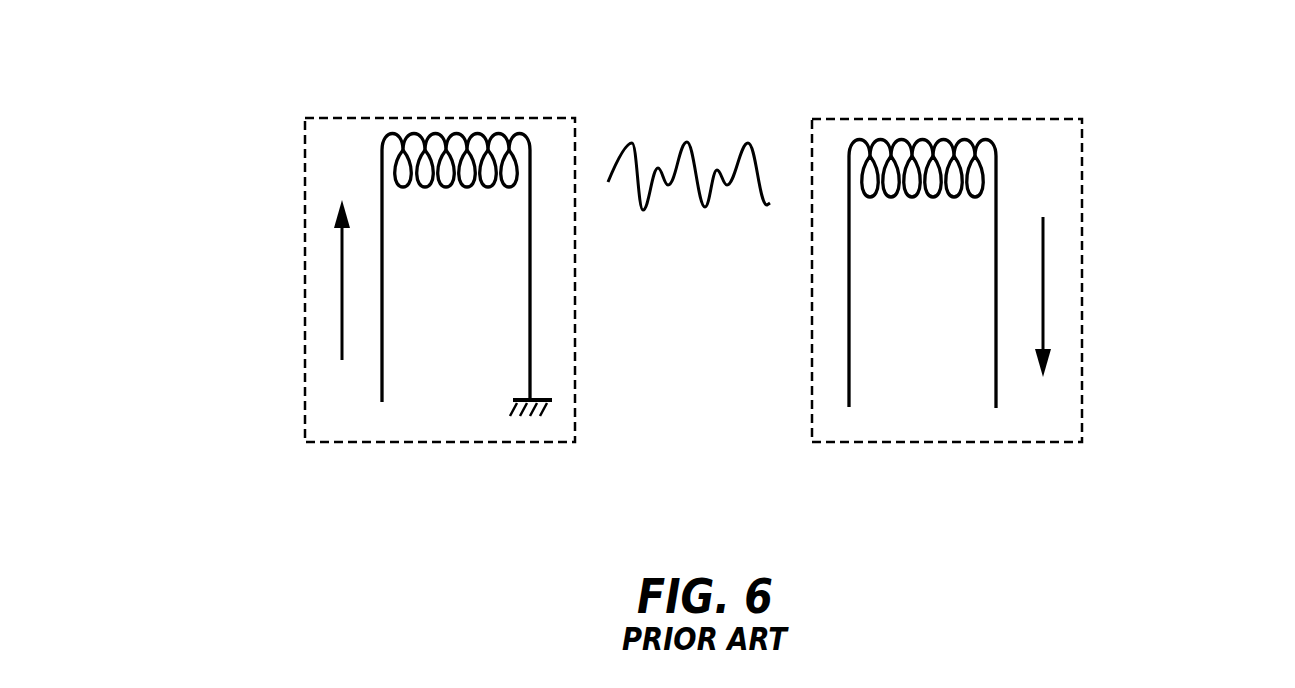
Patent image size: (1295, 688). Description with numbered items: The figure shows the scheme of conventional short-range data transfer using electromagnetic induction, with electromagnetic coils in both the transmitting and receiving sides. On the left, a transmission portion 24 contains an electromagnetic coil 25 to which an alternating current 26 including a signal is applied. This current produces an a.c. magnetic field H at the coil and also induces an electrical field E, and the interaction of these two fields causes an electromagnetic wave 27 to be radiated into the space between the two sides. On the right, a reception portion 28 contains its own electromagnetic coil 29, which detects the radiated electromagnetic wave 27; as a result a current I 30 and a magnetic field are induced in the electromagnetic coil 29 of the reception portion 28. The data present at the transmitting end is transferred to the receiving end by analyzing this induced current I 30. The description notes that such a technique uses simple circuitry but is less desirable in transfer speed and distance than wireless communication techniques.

The transmission portion 24 is at (407, 442).
The electromagnetic coil 25 is at (472, 134).
The alternating current 26 is at (342, 303).
The electromagnetic wave 27 is at (678, 217).
The reception portion 28 is at (916, 442).
The electromagnetic coil 29 is at (960, 140).
The induced current I 30 is at (1043, 275).